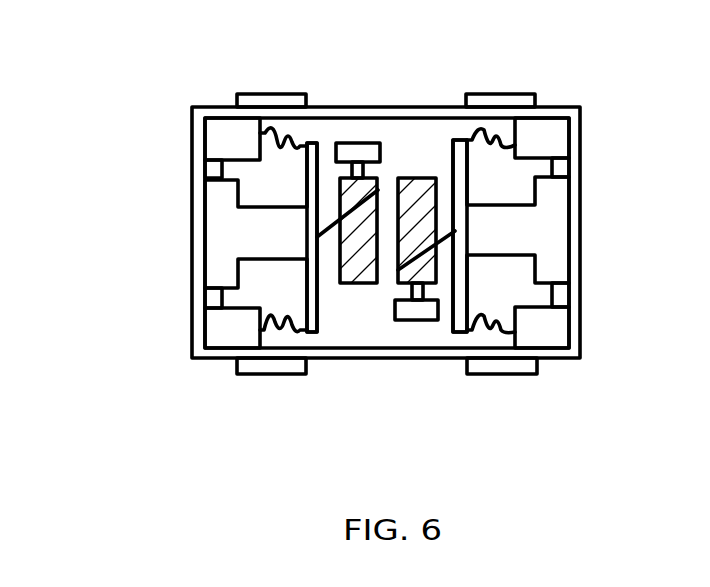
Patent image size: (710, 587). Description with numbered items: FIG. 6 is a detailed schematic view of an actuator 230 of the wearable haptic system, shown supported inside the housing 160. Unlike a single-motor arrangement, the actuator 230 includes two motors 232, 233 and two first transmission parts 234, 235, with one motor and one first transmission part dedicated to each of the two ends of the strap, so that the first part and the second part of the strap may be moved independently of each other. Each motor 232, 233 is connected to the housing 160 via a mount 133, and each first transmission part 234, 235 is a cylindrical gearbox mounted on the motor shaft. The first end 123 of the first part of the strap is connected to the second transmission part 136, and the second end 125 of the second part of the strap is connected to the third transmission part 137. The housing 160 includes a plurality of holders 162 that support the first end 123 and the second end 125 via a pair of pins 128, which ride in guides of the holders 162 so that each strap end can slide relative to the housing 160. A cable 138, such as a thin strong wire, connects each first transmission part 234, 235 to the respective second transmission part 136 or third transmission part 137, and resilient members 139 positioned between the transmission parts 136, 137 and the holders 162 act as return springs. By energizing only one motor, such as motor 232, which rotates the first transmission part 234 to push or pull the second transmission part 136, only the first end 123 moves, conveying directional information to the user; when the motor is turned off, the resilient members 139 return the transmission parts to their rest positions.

The actuator 230 is at (172, 102).
The housing 160 is at (580, 106).
The holders 162 is at (213, 137).
The pins 128 is at (218, 172).
The first end 123 is at (220, 235).
The second end 125 is at (562, 232).
The second transmission part 136 is at (319, 145).
The third transmission part 137 is at (453, 172).
The cable 138 is at (446, 230).
The resilient members 139 is at (260, 132).
The mount 133 is at (335, 145).
The motor 232 is at (367, 174).
The motor 233 is at (398, 288).
The first transmission part 234 is at (360, 283).
The first transmission part 235 is at (417, 177).